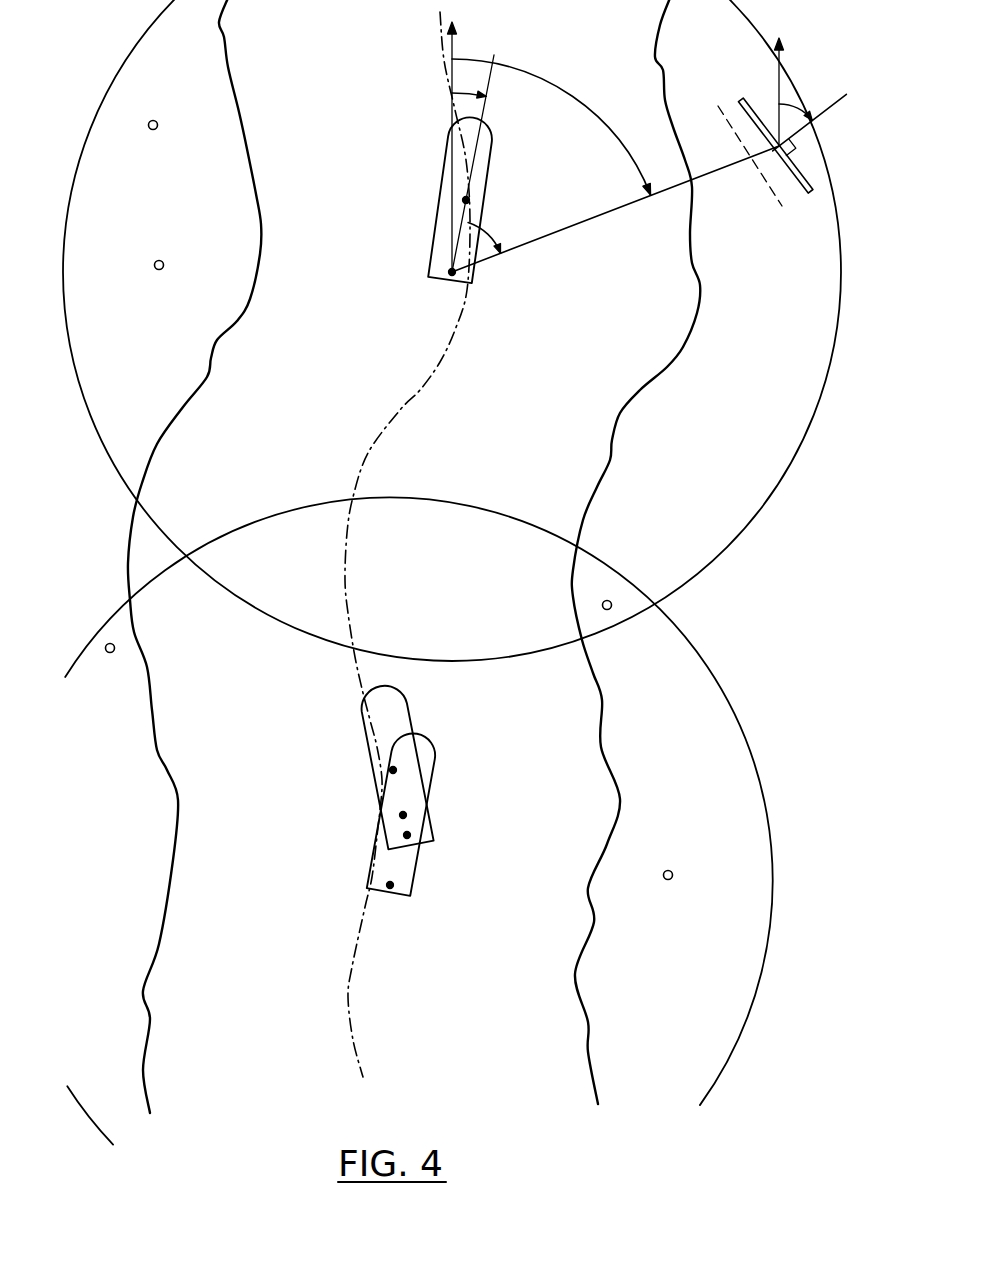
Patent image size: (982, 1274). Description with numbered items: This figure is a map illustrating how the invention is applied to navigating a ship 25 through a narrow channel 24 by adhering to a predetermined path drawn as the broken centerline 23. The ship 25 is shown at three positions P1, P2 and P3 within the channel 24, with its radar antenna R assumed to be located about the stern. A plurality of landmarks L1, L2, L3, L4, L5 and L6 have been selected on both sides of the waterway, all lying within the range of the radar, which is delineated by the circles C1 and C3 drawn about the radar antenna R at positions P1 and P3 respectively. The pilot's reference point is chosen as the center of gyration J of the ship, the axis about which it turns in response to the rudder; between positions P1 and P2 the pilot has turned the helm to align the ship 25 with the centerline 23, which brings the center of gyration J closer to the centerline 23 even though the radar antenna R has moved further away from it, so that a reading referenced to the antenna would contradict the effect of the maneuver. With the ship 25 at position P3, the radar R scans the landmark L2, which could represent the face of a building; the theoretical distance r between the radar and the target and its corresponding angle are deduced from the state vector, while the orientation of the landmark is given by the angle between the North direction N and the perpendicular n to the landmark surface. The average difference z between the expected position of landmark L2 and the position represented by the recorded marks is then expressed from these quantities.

The predetermined path 23 is at (431, 378).
The channel 24 is at (537, 437).
The ship 25 is at (426, 506).
The first ship position P1 is at (408, 814).
The second ship position P2 is at (401, 768).
The third ship position P3 is at (439, 200).
The radar antenna R is at (449, 276).
The center of gyration J is at (470, 203).
The North direction N is at (624, 147).
The theoretical distance r is at (615, 209).
The landmark L2 is at (810, 192).
The perpendicular to the landmark surface n is at (810, 122).
The average difference z is at (734, 103).
The landmark L1 is at (156, 129).
The landmark L3 is at (162, 269).
The landmark L4 is at (609, 588).
The landmark L5 is at (106, 650).
The landmark L6 is at (671, 879).
The radar range circle C1 is at (717, 683).
The radar range circle C3 is at (714, 561).